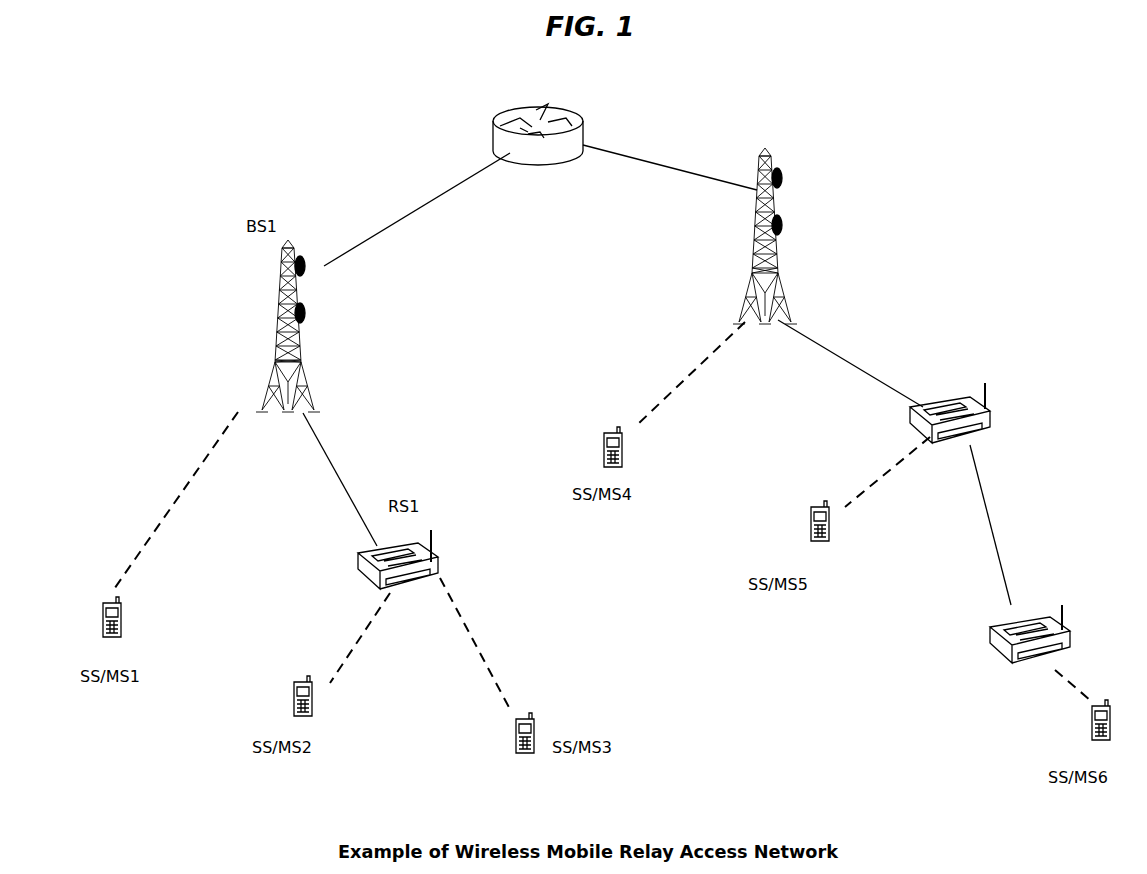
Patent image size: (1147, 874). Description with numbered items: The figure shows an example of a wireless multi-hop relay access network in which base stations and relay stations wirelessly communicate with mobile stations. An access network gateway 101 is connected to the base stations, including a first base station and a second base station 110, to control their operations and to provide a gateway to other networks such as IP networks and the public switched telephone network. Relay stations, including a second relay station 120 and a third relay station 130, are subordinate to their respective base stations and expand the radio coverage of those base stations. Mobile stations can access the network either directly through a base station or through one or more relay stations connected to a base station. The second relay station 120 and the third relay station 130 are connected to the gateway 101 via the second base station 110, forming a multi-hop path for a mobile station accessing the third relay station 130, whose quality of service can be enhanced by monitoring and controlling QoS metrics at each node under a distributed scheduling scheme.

The access network gateway 101 is at (493, 106).
The base station BS2 110 is at (779, 218).
The relay station RS2 120 is at (962, 385).
The relay station RS3 130 is at (1042, 595).